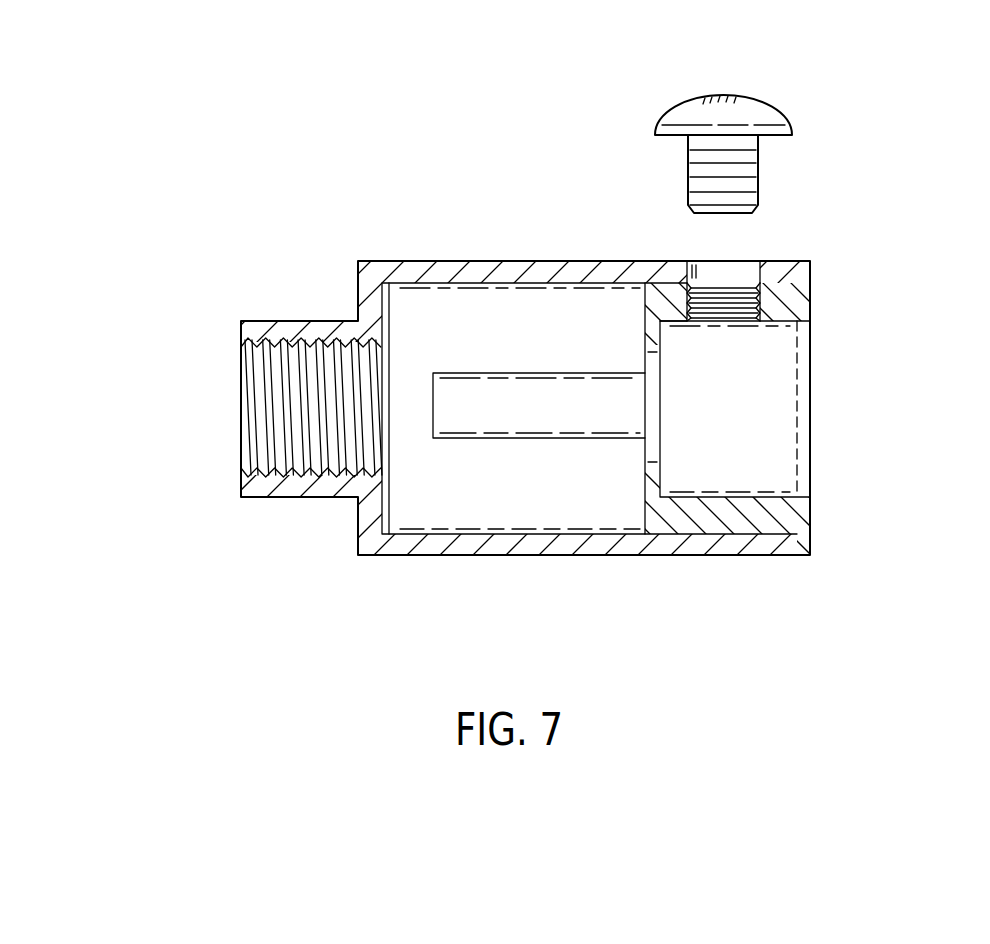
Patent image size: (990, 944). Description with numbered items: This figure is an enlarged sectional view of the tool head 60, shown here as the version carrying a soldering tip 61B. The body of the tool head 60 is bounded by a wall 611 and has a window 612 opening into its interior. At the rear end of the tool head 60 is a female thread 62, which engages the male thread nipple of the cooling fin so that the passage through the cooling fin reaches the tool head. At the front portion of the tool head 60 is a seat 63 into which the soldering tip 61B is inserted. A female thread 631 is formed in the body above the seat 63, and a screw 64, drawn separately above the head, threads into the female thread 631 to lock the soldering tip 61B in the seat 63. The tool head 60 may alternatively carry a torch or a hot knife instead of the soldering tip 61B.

The tool head 60 is at (485, 254).
The wall 611 is at (478, 549).
The soldering tip 61B is at (738, 556).
The window 612 is at (448, 382).
The female thread 62 is at (252, 460).
The seat 63 is at (812, 512).
The female thread 631 is at (805, 290).
The screw 64 is at (718, 91).